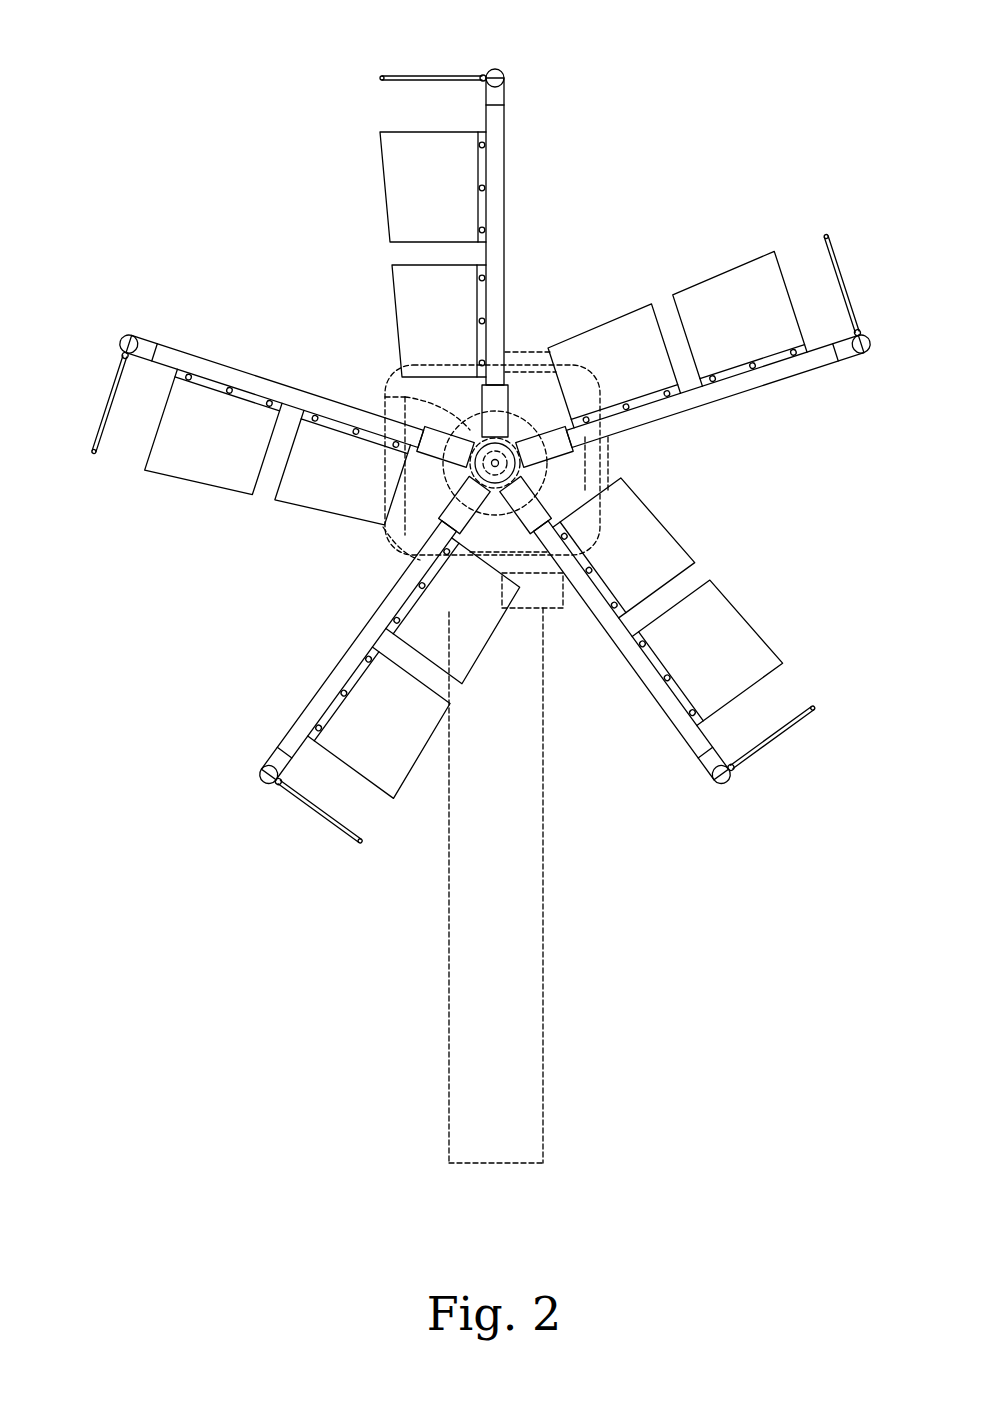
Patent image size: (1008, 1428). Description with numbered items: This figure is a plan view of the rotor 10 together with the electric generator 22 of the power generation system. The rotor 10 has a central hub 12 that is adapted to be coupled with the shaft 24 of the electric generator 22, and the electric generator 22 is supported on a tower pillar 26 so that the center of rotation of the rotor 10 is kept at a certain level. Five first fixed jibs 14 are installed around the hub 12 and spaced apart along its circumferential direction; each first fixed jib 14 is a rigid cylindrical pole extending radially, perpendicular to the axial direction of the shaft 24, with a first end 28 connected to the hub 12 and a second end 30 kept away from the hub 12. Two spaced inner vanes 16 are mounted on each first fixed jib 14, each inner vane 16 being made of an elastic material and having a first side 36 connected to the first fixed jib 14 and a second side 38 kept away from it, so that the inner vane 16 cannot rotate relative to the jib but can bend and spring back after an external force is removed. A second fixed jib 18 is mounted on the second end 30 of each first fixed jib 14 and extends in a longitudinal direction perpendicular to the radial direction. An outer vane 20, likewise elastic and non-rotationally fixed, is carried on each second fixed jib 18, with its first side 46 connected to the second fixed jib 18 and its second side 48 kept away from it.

The rotor 10 is at (175, 203).
The hub 12 is at (606, 470).
The first fixed jib 14 is at (500, 208).
The inner vane 16 is at (383, 142).
The second fixed jib 18 is at (505, 76).
The outer vane 20 is at (423, 76).
The electric generator 22 is at (393, 547).
The shaft 24 is at (432, 402).
The tower pillar 26 is at (528, 963).
The first end 28 is at (500, 367).
The second end 30 is at (506, 105).
The first side 36 is at (770, 347).
The second side 38 is at (745, 270).
The first side 46 is at (482, 76).
The second side 48 is at (386, 76).